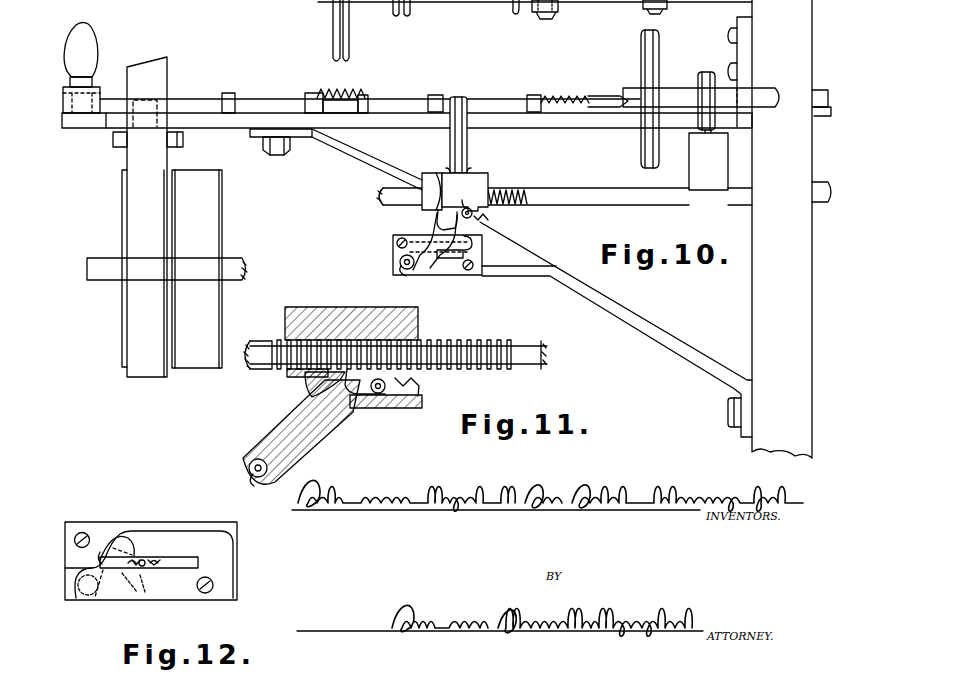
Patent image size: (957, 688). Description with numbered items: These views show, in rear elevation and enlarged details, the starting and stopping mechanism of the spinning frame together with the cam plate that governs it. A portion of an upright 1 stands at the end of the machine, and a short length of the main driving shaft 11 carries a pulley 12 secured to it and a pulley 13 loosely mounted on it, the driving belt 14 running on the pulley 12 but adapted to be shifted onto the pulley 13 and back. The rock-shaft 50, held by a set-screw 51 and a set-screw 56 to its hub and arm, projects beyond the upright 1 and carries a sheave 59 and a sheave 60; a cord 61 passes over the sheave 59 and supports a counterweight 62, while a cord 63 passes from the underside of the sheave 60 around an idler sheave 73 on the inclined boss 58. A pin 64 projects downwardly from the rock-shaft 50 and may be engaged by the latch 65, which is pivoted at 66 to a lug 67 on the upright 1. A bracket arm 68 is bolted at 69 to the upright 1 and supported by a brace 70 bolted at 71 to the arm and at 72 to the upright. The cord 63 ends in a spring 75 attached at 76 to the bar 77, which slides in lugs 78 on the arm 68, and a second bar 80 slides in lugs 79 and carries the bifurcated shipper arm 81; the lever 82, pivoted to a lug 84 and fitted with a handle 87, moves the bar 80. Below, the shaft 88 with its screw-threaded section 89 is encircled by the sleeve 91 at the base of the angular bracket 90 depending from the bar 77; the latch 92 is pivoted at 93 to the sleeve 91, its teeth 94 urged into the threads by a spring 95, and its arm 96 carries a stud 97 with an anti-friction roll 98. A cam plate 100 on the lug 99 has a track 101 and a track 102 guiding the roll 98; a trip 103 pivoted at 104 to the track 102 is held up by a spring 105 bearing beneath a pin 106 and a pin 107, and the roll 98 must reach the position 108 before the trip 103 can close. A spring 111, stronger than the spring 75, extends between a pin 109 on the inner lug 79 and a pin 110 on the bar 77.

In FIG. 10, the upright 1 is at (782, 256).
In FIG. 10, the main driving shaft 11 is at (104, 272).
In FIG. 10, the pulley 12 is at (121, 365).
In FIG. 10, the pulley 13 is at (196, 360).
In FIG. 10, the driving belt 14 is at (145, 372).
In FIG. 10, the rock-shaft 50 is at (770, 86).
In FIG. 10, the set-screw 51 is at (660, 14).
In FIG. 10, the set-screw 56 is at (549, 19).
In FIG. 10, the inclined boss 58 is at (622, 108).
In FIG. 10, the sheave 59 is at (404, 14).
In FIG. 10, the sheave 60 is at (642, 156).
In FIG. 10, the cord 61 is at (392, 8).
In FIG. 10, the counterweight 62 is at (718, 165).
In FIG. 10, the cord 63 is at (645, 56).
In FIG. 10, the pin 64 is at (515, 14).
In FIG. 10, the latch 65 is at (831, 113).
In FIG. 10, the pivot 66 is at (822, 124).
In FIG. 10, the lug 67 is at (828, 90).
In FIG. 10, the bracket arm 68 is at (497, 123).
In FIG. 10, the bolt 69 is at (730, 74).
In FIG. 10, the brace 70 is at (616, 310).
In FIG. 10, the bolt 71 is at (272, 156).
In FIG. 10, the bolt 72 is at (728, 412).
In FIG. 10, the idler sheave 73 is at (620, 100).
In FIG. 10, the spring 75 is at (577, 110).
In FIG. 10, the attachment point 76 is at (540, 98).
In FIG. 10, the bar 77 is at (474, 105).
In FIG. 10, the lugs 78 is at (434, 95).
In FIG. 10, the lugs 79 is at (228, 93).
In FIG. 10, the bar 80 is at (278, 108).
In FIG. 10, the shipper arm 81 is at (184, 141).
In FIG. 10, the lever 82 is at (97, 90).
In FIG. 10, the lug 84 is at (93, 124).
In FIG. 10, the handle 87 is at (84, 32).
In FIG. 10, the shaft 88 is at (660, 207).
In FIG. 11, the shaft 88 is at (536, 346).
In FIG. 10, the screw-threaded section 89 is at (512, 190).
In FIG. 11, the screw-threaded section 89 is at (484, 369).
In FIG. 10, the angular bracket 90 is at (449, 144).
In FIG. 10, the sleeve 91 is at (488, 182).
In FIG. 11, the sleeve 91 is at (316, 318).
In FIG. 10, the latch 92 is at (436, 228).
In FIG. 11, the latch 92 is at (358, 394).
In FIG. 10, the pivot 93 is at (472, 216).
In FIG. 11, the pivot 93 is at (384, 392).
In FIG. 10, the teeth 94 is at (433, 176).
In FIG. 11, the teeth 94 is at (306, 390).
In FIG. 10, the spring 95 is at (490, 216).
In FIG. 11, the spring 95 is at (418, 384).
In FIG. 10, the arm 96 is at (430, 262).
In FIG. 11, the arm 96 is at (300, 456).
In FIG. 10, the stud 97 is at (400, 264).
In FIG. 11, the stud 97 is at (262, 458).
In FIG. 10, the anti-friction roll 98 is at (404, 276).
In FIG. 11, the anti-friction roll 98 is at (252, 480).
In FIG. 12, the anti-friction roll 98 is at (108, 544).
In FIG. 10, the lug 99 is at (500, 266).
In FIG. 10, the cam plate 100 is at (392, 244).
In FIG. 12, the cam plate 100 is at (195, 540).
In FIG. 10, the track 101 is at (474, 242).
In FIG. 12, the track 101 is at (138, 534).
In FIG. 10, the track 102 is at (458, 258).
In FIG. 12, the track 102 is at (180, 570).
In FIG. 12, the trip 103 is at (112, 572).
In FIG. 12, the pivot 104 is at (142, 568).
In FIG. 12, the spring 105 is at (148, 560).
In FIG. 12, the pin 106 is at (160, 560).
In FIG. 12, the pin 107 is at (125, 540).
In FIG. 12, the roll position 108 is at (84, 594).
In FIG. 10, the pin 109 is at (313, 93).
In FIG. 10, the pin 110 is at (366, 98).
In FIG. 10, the spring 111 is at (345, 90).